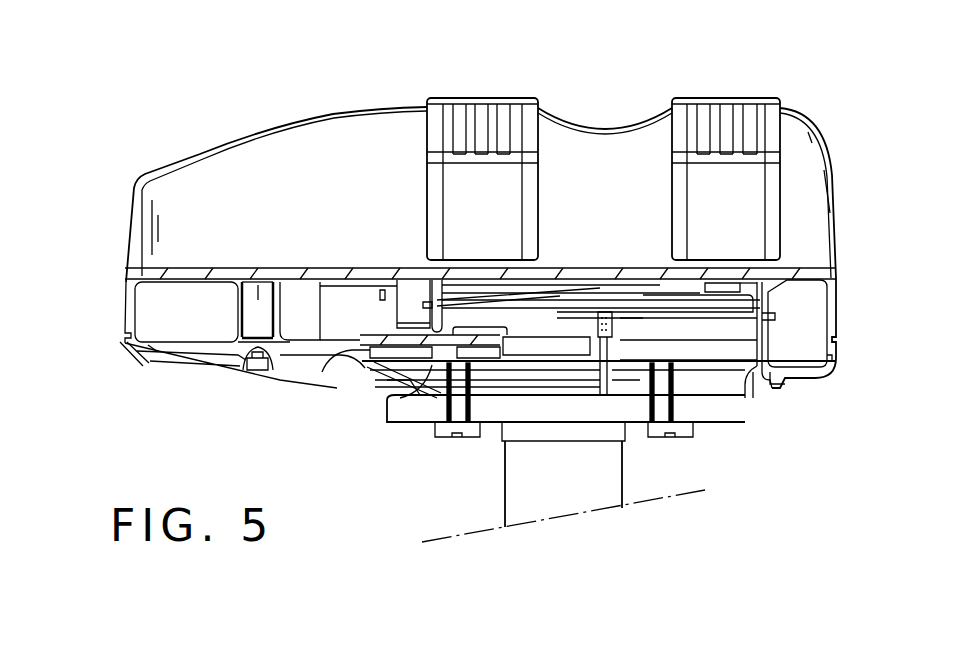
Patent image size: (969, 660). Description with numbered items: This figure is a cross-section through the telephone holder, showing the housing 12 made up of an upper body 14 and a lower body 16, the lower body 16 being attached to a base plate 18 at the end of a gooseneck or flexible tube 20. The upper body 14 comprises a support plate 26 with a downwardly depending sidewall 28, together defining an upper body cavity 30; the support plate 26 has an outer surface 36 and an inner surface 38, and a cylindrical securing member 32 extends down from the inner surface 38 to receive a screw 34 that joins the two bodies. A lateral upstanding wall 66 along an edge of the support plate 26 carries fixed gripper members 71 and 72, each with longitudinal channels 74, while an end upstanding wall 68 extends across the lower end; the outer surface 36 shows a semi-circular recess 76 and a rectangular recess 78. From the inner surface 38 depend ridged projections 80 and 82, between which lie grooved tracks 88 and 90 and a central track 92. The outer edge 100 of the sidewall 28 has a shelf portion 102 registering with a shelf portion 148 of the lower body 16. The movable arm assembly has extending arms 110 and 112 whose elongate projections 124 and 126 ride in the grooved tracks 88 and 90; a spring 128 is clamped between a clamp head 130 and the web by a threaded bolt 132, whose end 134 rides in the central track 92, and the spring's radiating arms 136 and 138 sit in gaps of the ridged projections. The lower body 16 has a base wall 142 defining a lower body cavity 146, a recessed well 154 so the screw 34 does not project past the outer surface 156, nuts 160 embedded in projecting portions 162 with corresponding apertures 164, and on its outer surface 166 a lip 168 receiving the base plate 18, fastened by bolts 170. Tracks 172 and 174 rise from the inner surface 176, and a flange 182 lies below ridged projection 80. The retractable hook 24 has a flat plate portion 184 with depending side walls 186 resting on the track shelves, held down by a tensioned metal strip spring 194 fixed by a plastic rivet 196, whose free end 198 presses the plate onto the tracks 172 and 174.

The housing 12 is at (163, 103).
The upper body 14 is at (112, 266).
The lower body 16 is at (112, 347).
The base plate 18 is at (388, 405).
The gooseneck or flexible tube 20 is at (522, 500).
The retractable hook 24 is at (468, 422).
The support plate 26 is at (172, 274).
The sidewall 28 is at (840, 282).
The upper body cavity 30 is at (834, 338).
The internally threaded cylindrical securing member 32 is at (260, 288).
The screw 34 is at (255, 370).
The outer surface 36 is at (236, 279).
The inner surface 38 is at (212, 290).
The lateral upstanding wall 66 is at (273, 157).
The end upstanding wall 68 is at (132, 252).
The fixed gripper member 71 is at (718, 98).
The fixed gripper member 72 is at (468, 98).
The longitudinal channels 74 is at (504, 118).
The semi-circular recess 76 is at (662, 270).
The rectangular recess 78 is at (288, 275).
The ridged projection 80 is at (772, 332).
The ridged projection 82 is at (368, 386).
The grooved track 88 is at (740, 275).
The grooved track 90 is at (447, 282).
The central track 92 is at (572, 278).
The outer edge 100 is at (124, 312).
The shelf portion 102 is at (137, 332).
The extending arm 110 is at (780, 272).
The extending arm 112 is at (418, 268).
The elongate projection 124 is at (720, 277).
The elongate projection 126 is at (480, 290).
The spring 128 is at (630, 280).
The clamp head 130 is at (660, 370).
The threaded bolt 132 is at (624, 445).
The end of the bolt 134 is at (590, 278).
The radiating arm 136 is at (748, 345).
The radiating arm 138 is at (515, 280).
The base wall 142 is at (177, 372).
The lower body cavity 146 is at (157, 350).
The shelf portion 148 is at (127, 348).
The recessed well 154 is at (247, 373).
The outer surface 156 is at (297, 387).
The nut 160 is at (700, 425).
The projecting portion 162 is at (660, 428).
The aperture 164 is at (395, 410).
The outer surface 166 is at (831, 360).
The lip 168 is at (748, 408).
The bolt 170 is at (442, 442).
The track 172 is at (568, 388).
The track 174 is at (350, 355).
The inner surface 176 is at (292, 360).
The flange 182 is at (784, 388).
The flat plate portion 184 is at (540, 345).
The depending side walls 186 is at (535, 436).
The tensioned metal strip spring 194 is at (395, 303).
The plastic rivet 196 is at (398, 268).
The free end 198 is at (395, 327).